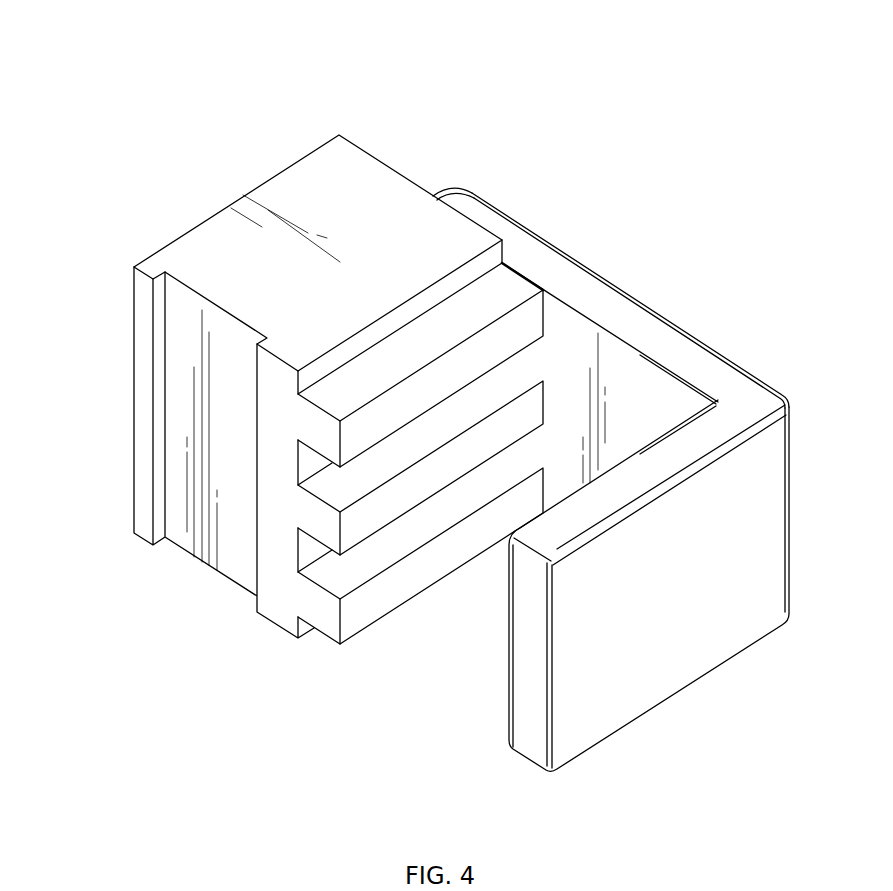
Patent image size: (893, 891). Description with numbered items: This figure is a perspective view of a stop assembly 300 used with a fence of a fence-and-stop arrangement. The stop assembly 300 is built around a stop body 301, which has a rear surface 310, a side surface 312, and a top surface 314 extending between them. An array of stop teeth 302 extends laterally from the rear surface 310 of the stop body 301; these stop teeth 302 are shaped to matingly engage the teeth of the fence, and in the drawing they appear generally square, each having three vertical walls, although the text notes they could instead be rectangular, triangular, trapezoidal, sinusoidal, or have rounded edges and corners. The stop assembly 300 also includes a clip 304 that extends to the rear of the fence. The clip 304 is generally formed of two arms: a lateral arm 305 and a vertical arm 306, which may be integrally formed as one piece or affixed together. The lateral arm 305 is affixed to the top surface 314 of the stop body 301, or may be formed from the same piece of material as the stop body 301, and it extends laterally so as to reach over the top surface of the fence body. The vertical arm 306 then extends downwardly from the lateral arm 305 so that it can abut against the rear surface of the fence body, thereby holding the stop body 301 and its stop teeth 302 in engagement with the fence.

The stop assembly 300 is at (288, 82).
The stop body 301 is at (95, 360).
The stop teeth 302 is at (378, 513).
The clip 304 is at (806, 330).
The lateral arm 305 is at (665, 338).
The vertical arm 306 is at (650, 677).
The rear surface 310 is at (493, 257).
The side surface 312 is at (317, 293).
The top surface 314 is at (407, 177).